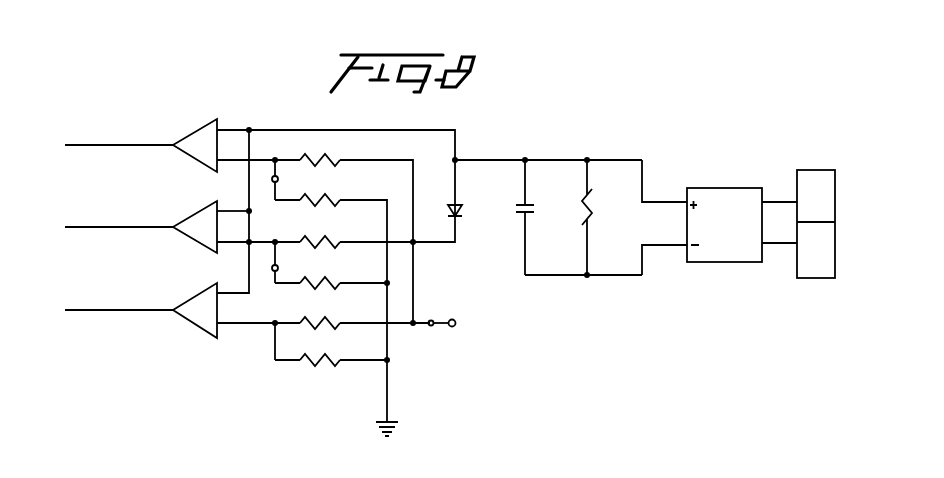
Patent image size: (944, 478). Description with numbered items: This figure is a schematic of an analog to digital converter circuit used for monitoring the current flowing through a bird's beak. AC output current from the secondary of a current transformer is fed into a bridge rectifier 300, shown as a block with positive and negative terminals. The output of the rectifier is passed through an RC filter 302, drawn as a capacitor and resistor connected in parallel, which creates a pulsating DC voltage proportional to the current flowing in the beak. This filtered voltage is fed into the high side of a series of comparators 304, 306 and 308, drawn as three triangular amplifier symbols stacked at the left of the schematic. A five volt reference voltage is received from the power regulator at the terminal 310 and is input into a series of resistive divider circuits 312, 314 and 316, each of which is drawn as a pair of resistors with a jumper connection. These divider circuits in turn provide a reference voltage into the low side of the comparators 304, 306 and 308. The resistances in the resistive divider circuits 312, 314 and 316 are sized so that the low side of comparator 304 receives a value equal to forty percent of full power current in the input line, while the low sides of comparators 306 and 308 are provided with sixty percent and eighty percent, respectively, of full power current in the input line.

The bridge rectifier 300 is at (713, 191).
The RC filter 302 is at (567, 279).
The comparator 304 is at (190, 143).
The comparator 306 is at (195, 232).
The comparator 308 is at (200, 322).
The five volt reference voltage 310 is at (433, 326).
The resistive divider circuit 312 is at (273, 184).
The resistive divider circuit 314 is at (273, 273).
The resistive divider circuit 316 is at (273, 350).